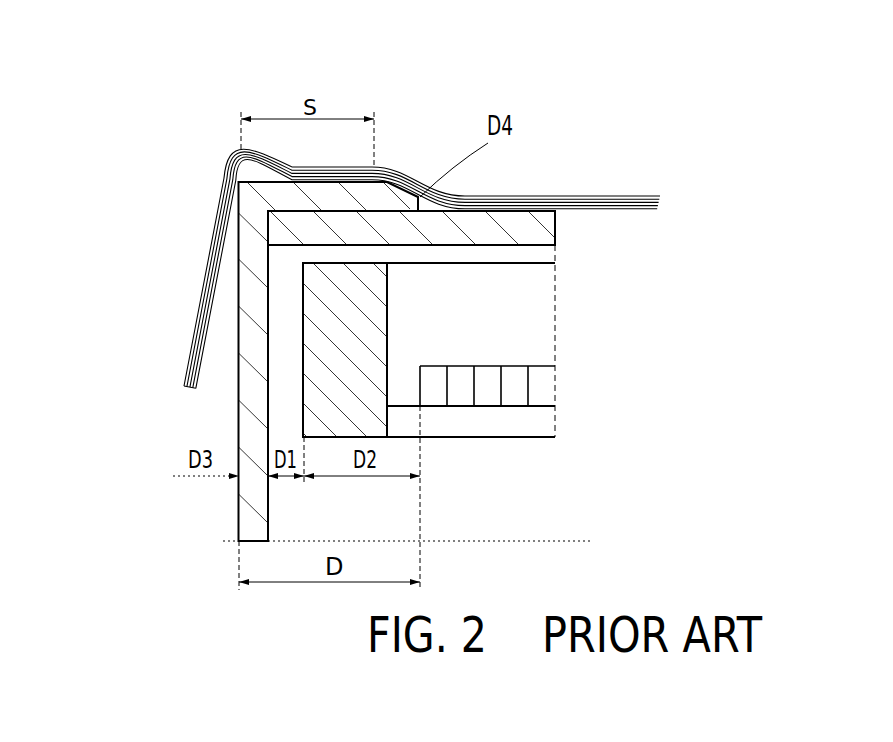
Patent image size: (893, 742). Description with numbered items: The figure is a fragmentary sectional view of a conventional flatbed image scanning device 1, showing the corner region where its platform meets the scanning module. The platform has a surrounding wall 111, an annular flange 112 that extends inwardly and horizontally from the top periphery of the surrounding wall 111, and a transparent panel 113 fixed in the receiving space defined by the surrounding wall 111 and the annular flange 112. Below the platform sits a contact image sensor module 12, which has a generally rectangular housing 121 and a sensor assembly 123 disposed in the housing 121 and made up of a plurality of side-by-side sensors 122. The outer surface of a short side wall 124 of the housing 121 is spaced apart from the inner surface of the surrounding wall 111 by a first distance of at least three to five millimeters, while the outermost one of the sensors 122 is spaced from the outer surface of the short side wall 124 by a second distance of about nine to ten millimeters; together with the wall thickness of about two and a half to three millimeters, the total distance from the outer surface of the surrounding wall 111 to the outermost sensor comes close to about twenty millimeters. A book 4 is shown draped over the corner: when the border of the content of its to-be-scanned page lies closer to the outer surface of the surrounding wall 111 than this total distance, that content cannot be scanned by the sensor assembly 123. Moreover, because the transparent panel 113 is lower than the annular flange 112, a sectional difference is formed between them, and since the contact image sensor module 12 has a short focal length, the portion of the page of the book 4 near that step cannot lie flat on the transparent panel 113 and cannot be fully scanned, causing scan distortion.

The flatbed image scanning device 1 is at (207, 187).
The surrounding wall 111 is at (238, 292).
The annular flange 112 is at (323, 181).
The transparent panel 113 is at (457, 210).
The contact image sensor module 12 is at (290, 340).
The housing 121 is at (302, 380).
The sensors 122 is at (460, 380).
The sensor assembly 123 is at (507, 355).
The short side wall 124 is at (305, 422).
The book 4 is at (620, 195).